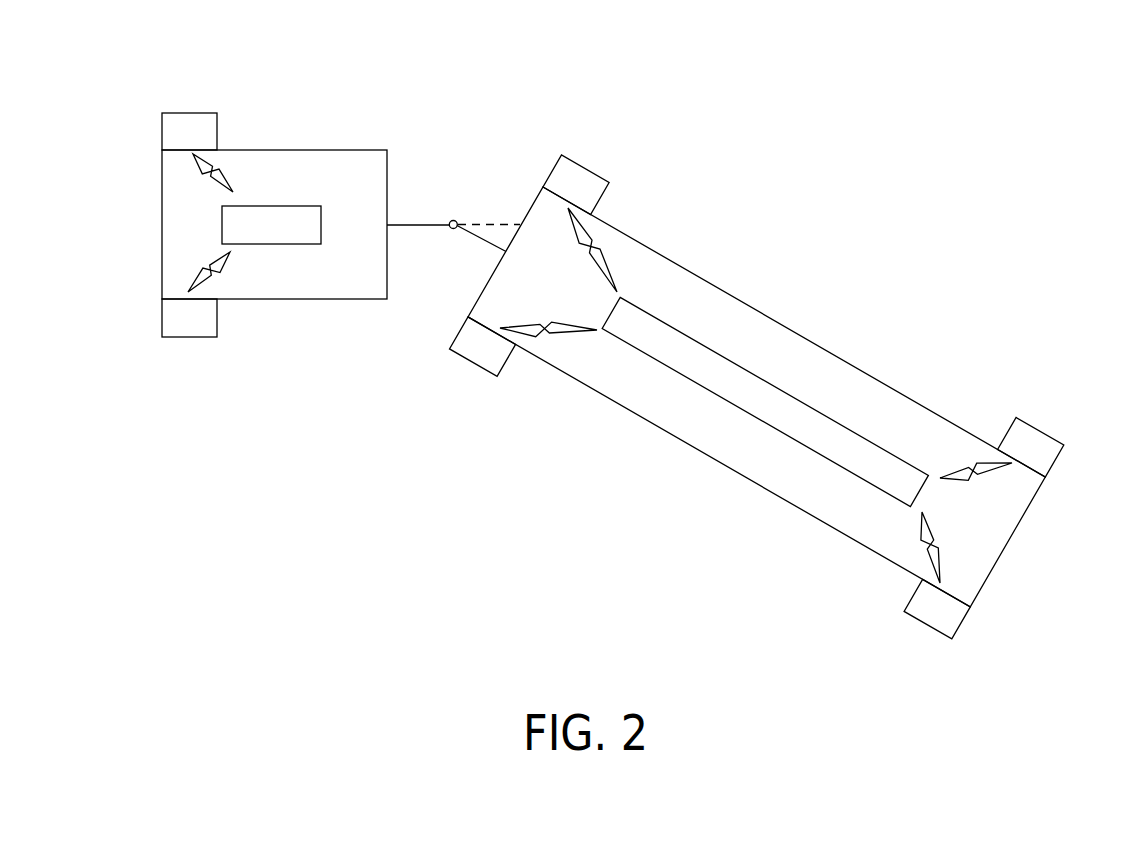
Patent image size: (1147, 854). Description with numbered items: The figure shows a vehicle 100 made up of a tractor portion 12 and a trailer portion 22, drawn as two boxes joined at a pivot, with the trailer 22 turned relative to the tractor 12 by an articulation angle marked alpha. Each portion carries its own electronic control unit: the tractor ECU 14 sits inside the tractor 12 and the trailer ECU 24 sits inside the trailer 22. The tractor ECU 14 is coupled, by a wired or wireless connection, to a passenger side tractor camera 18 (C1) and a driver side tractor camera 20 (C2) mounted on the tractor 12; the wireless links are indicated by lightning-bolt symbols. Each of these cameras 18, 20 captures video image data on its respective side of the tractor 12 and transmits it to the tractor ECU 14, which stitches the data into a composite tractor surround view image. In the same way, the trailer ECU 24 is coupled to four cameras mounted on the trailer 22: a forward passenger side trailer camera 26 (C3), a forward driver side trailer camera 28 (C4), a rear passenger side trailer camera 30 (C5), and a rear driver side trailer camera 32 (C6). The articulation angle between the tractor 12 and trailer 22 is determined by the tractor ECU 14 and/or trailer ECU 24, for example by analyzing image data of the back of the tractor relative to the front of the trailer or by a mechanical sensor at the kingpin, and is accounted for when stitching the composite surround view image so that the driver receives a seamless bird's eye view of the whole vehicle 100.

The vehicle 100 is at (604, 33).
The tractor portion 12 is at (255, 150).
The tractor ECU 14 is at (275, 206).
The passenger side tractor camera 18 is at (190, 112).
The driver side tractor camera 20 is at (182, 337).
The trailer portion 22 is at (752, 308).
The trailer ECU 24 is at (755, 375).
The forward passenger side trailer camera 26 is at (590, 165).
The forward driver side trailer camera 28 is at (480, 368).
The rear passenger side trailer camera 30 is at (1037, 430).
The rear driver side trailer camera 32 is at (924, 627).